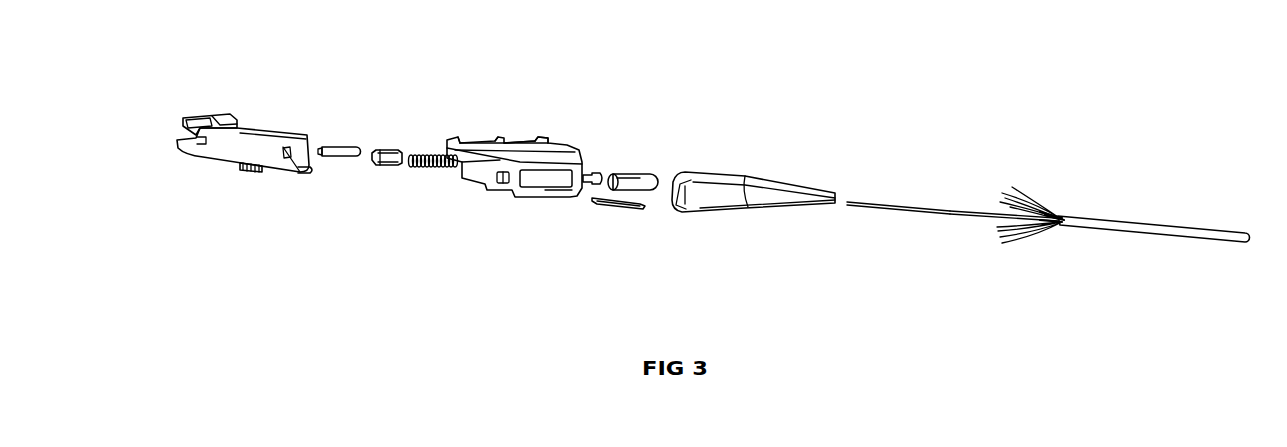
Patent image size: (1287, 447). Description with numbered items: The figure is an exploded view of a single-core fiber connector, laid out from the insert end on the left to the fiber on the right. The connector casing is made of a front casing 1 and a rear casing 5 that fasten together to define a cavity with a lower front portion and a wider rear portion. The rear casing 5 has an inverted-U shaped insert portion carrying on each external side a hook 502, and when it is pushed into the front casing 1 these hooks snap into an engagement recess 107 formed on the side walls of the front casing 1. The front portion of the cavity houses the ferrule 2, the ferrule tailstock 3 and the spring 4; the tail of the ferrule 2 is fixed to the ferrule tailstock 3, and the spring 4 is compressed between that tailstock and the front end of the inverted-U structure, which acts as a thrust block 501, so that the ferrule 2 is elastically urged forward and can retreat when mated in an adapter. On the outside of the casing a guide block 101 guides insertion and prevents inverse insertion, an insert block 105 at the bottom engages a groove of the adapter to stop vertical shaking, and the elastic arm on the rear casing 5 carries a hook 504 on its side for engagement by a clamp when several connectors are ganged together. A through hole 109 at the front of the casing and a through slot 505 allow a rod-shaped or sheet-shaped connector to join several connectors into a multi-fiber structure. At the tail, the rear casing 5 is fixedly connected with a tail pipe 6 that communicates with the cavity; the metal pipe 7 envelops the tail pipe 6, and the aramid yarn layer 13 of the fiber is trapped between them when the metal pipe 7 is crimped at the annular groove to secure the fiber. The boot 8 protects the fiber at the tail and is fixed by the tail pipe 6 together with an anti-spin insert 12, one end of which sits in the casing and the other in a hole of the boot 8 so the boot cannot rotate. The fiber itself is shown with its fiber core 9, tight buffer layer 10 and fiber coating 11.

The front casing 1 is at (237, 147).
The guide block 101 is at (227, 115).
The through hole 109 is at (203, 112).
The insert block 105 is at (248, 170).
The engagement recess 107 is at (287, 173).
The ferrule 2 is at (332, 147).
The ferrule tailstock 3 is at (388, 149).
The spring 4 is at (440, 170).
The rear casing 5 is at (538, 195).
The thrust block 501 is at (465, 153).
The hook 502 is at (497, 183).
The hook 504 is at (522, 145).
The through slot 505 is at (548, 197).
The tail pipe 6 is at (593, 173).
The metal pipe 7 is at (642, 177).
The boot 8 is at (722, 190).
The fiber core 9 is at (870, 203).
The tight buffer layer 10 is at (975, 210).
The fiber coating 11 is at (1155, 226).
The anti-spin insert 12 is at (620, 203).
The aramid yarn layer 13 is at (1043, 210).